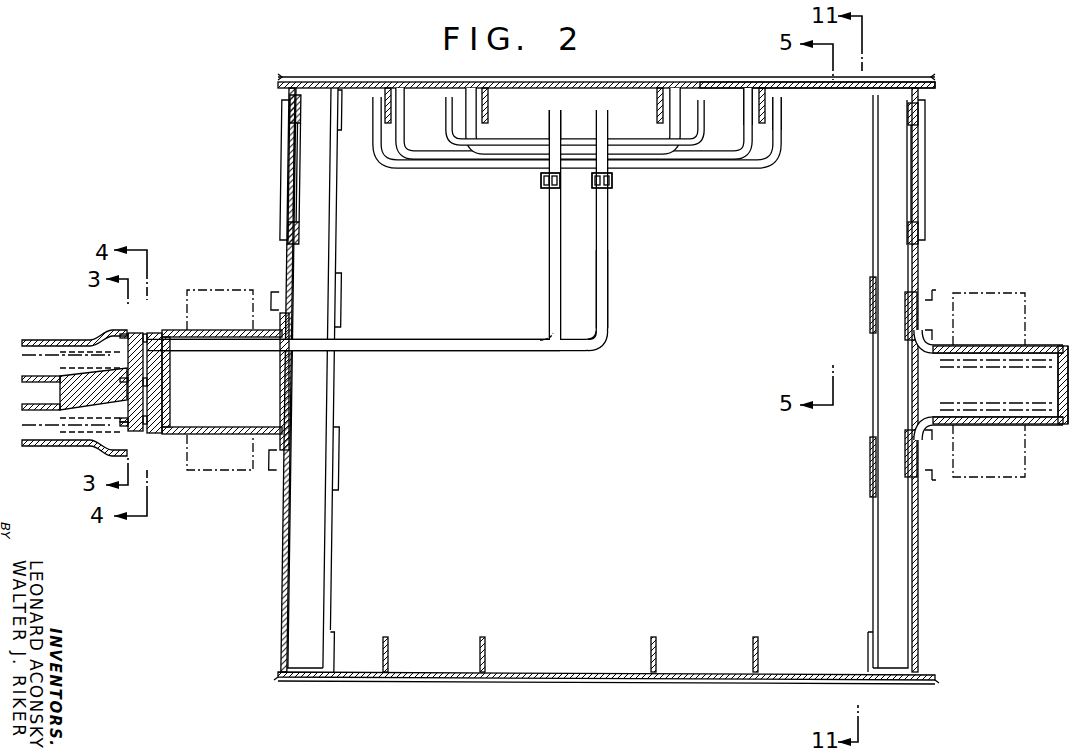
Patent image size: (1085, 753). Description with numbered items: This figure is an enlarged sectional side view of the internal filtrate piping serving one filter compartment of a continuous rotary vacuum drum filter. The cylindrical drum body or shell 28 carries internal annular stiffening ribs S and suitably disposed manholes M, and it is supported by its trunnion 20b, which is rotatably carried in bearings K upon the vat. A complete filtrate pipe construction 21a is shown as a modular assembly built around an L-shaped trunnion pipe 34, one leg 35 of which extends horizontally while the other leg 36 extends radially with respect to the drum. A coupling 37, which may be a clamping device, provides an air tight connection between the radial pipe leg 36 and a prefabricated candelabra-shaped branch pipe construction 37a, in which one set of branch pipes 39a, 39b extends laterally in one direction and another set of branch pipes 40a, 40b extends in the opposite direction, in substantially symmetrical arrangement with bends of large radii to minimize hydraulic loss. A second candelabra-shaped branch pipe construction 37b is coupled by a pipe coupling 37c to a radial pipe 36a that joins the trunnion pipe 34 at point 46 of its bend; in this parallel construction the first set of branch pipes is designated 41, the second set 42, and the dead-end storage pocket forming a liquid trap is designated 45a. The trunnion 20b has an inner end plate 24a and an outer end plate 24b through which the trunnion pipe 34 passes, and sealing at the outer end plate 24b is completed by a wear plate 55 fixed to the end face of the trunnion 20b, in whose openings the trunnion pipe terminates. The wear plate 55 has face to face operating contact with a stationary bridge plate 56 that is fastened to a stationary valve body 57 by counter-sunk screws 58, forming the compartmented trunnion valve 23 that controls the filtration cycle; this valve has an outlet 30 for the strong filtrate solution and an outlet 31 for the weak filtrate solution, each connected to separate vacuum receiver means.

The top plate T is at (600, 78).
The cylindrical drum body or shell 28 is at (830, 88).
The manhole M is at (282, 152).
The bearing K is at (968, 293).
The trunnion 20b is at (978, 424).
The first set of branch pipes 41 is at (395, 168).
The second set of branch pipes 42 is at (762, 168).
The branch pipe 39a is at (406, 140).
The branch pipe 39b is at (470, 136).
The branch pipe 40a is at (652, 142).
The branch pipe 40b is at (744, 142).
The trap 45a is at (561, 129).
The radial pipe leg 36 is at (607, 236).
The radial pipe 36a is at (550, 245).
The horizontal pipe leg 35 is at (472, 350).
The L-shaped trunnion pipe 34 is at (576, 358).
The filtrate pipe construction 21a is at (614, 292).
The point 46 is at (530, 344).
The coupling 37 is at (592, 186).
The candelabra-shaped branch pipe construction 37a is at (615, 169).
The second candelabra-shaped branch pipe construction 37b is at (539, 171).
The pipe coupling 37c is at (541, 187).
The trunnion valve 23 is at (118, 330).
The outlet 31 is at (122, 352).
The outlet 30 is at (120, 418).
The wear plate 55 is at (144, 334).
The counter-sunk screw 58 is at (151, 433).
The bridge plate 56 is at (130, 432).
The valve body 57 is at (103, 446).
The outer end plate 24b is at (172, 388).
The inner end plate 24a is at (280, 392).
The stiffening rib S is at (390, 650).